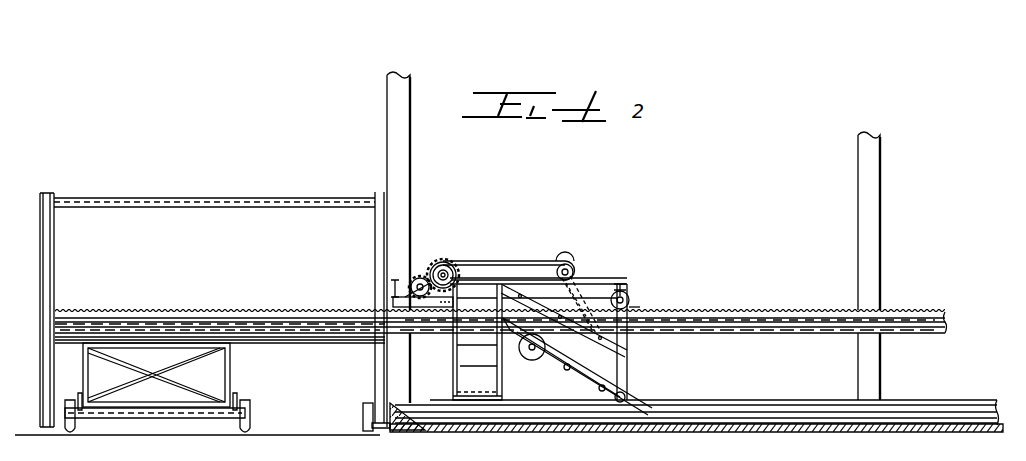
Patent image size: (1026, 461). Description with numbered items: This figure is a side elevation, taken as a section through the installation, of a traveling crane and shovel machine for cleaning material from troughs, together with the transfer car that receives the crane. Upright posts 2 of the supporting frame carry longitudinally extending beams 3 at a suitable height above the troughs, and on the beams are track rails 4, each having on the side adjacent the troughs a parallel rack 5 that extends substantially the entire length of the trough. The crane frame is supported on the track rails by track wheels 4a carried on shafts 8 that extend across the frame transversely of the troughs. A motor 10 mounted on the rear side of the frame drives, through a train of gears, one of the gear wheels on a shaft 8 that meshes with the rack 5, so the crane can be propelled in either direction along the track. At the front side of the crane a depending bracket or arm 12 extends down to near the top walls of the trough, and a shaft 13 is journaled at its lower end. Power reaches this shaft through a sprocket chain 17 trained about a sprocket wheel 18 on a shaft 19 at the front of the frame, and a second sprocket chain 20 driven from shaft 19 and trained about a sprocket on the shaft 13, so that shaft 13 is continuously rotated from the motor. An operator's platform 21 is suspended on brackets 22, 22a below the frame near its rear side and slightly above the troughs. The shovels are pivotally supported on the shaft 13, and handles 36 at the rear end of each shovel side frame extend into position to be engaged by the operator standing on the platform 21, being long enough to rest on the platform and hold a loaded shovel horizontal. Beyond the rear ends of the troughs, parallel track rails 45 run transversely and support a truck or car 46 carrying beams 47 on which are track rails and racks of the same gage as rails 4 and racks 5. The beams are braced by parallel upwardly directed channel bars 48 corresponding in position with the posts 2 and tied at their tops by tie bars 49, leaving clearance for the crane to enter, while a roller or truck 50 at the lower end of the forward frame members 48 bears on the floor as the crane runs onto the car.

The posts 2 is at (400, 178).
The longitudinally extending beams 3 is at (745, 325).
The track rails 4 is at (828, 292).
The track wheels 4a is at (630, 306).
The rack 5 is at (178, 311).
The shafts 8 is at (628, 297).
The motor 10 is at (410, 282).
The depending bracket or arm 12 is at (628, 348).
The shaft 13 is at (620, 400).
The sprocket chain 17 is at (520, 262).
The sprocket wheel 18 is at (562, 265).
The shaft 19 is at (573, 268).
The sprocket chain 20 is at (588, 312).
The operator's platform 21 is at (478, 398).
The brackets 22 is at (460, 366).
The brackets 22a is at (495, 345).
The handles 36 is at (515, 330).
The track rails 45 is at (76, 430).
The truck or car 46 is at (228, 382).
The beams 47 is at (80, 328).
The channel bars 48 is at (50, 307).
The tie bars 49 is at (127, 200).
The roller or truck 50 is at (371, 410).